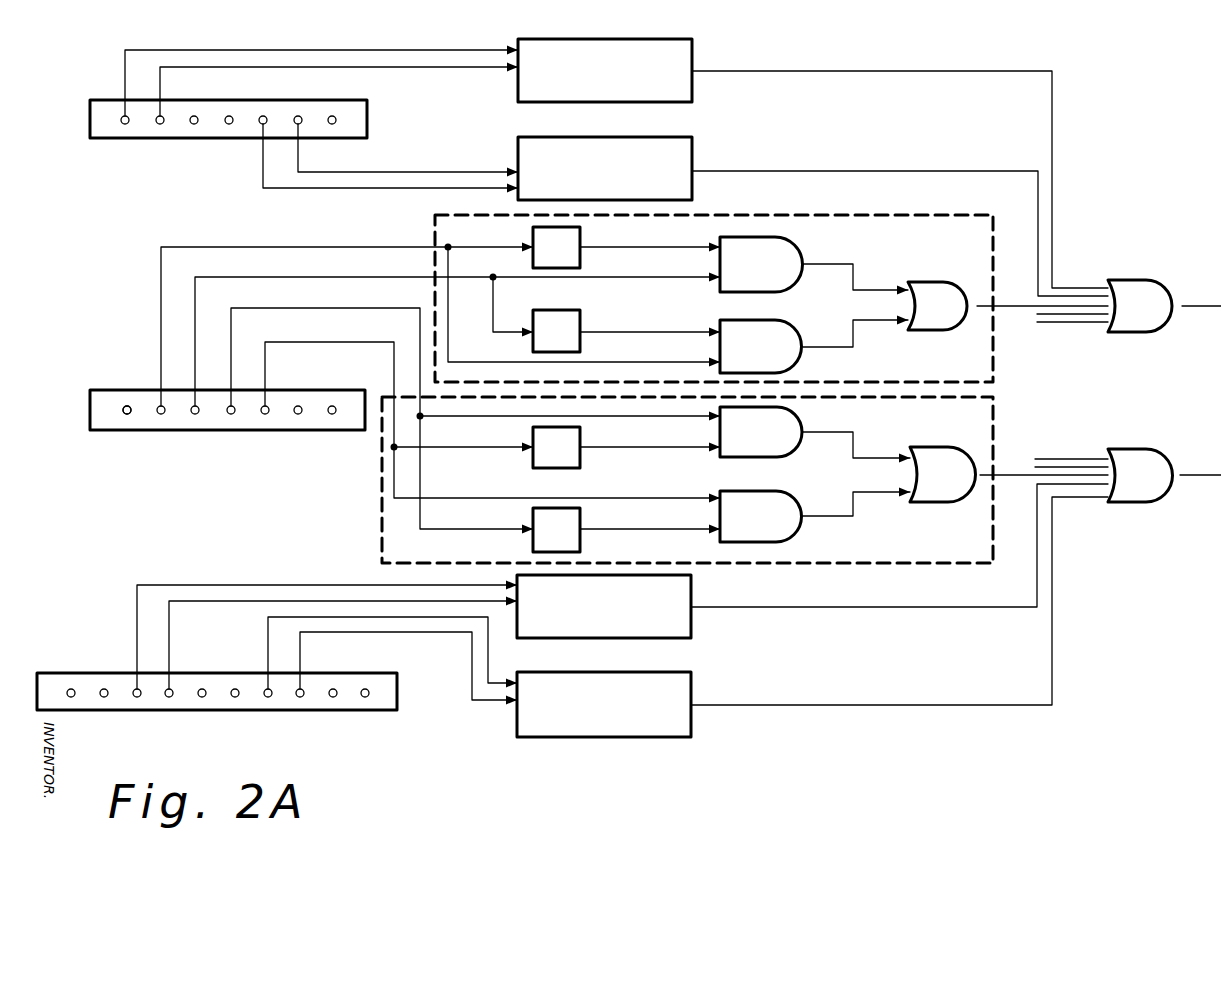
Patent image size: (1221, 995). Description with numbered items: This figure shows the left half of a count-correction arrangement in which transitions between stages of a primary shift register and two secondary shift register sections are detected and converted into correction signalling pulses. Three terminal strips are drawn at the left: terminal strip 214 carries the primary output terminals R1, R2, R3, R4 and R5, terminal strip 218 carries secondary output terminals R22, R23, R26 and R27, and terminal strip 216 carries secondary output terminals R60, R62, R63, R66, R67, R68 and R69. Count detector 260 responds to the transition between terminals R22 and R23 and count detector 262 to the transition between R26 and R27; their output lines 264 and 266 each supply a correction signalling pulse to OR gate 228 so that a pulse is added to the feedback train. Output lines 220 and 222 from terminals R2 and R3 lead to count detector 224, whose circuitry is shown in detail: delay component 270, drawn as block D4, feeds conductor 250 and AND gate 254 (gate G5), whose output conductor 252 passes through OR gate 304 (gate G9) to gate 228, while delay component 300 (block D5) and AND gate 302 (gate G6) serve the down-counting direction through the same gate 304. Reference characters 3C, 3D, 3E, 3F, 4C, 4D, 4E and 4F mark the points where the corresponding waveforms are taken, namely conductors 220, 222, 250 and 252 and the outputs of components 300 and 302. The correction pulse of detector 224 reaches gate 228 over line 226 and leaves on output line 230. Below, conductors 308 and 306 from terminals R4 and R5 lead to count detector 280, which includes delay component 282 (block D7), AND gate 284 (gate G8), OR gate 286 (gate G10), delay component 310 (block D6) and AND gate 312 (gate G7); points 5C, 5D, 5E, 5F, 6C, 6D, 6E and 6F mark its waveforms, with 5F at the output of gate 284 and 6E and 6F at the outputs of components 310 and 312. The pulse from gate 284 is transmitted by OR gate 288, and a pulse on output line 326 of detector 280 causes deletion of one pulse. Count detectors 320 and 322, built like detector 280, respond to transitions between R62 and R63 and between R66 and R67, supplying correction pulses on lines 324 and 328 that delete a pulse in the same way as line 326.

The terminal strip 218 is at (367, 134).
The secondary output terminal R22 is at (122, 124).
The secondary output terminal R23 is at (157, 124).
The secondary output terminal R26 is at (259, 119).
The secondary output terminal R27 is at (300, 118).
The count detector 260 is at (657, 22).
The count detector 262 is at (667, 122).
The output line 264 is at (866, 58).
The output line 266 is at (886, 148).
The count detector circuit 224 is at (927, 215).
The terminal strip 214 is at (354, 432).
The primary output terminal R1 is at (124, 414).
The primary output terminal R2 is at (158, 414).
The primary output terminal R3 is at (192, 414).
The primary output terminal R4 is at (228, 414).
The primary output terminal R5 is at (262, 414).
The waveform reference point 3C is at (250, 228).
The waveform reference point 4D is at (326, 228).
The waveform reference point 3D is at (268, 262).
The waveform reference point 4C is at (333, 262).
The waveform reference point 5C is at (316, 292).
The waveform reference point 6C is at (381, 292).
The waveform reference point 5D is at (346, 324).
The waveform reference point 6D is at (400, 324).
The conductor 308 is at (233, 343).
The conductor 306 is at (270, 384).
The output line 220 is at (161, 300).
The output line 222 is at (195, 330).
The delay D4 is at (626, 247).
The delay D5 is at (626, 331).
The delay D6 is at (626, 447).
The delay D7 is at (626, 530).
The delay component 270 is at (580, 242).
The waveform reference point 3E is at (690, 238).
The conductor 250 is at (612, 248).
The delay component 300 is at (567, 312).
The waveform reference point 4E is at (676, 318).
The AND gate G5 is at (814, 266).
The AND gate G6 is at (814, 345).
The AND gate G7 is at (815, 435).
The AND gate G8 is at (815, 515).
The OR gate G9 is at (1008, 306).
The OR gate G10 is at (1009, 474).
The AND gate 254 is at (780, 244).
The AND gate 302 is at (770, 324).
The waveform reference point 3F is at (884, 248).
The waveform reference point 4F is at (840, 336).
The conductor 252 is at (854, 280).
The OR gate 304 is at (978, 264).
The OR gate 228 is at (1150, 248).
The line 226 is at (1018, 310).
The output line 230 is at (1206, 310).
The count detector 280 is at (1004, 446).
The delay component 310 is at (580, 442).
The waveform reference point 6E is at (690, 438).
The delay component 282 is at (577, 525).
The waveform reference point 5E is at (696, 520).
The AND gate 312 is at (800, 424).
The waveform reference point 6F is at (824, 436).
The AND gate 284 is at (790, 476).
The waveform reference point 5F is at (846, 494).
The OR gate 286 is at (974, 426).
The OR gate 288 is at (1107, 550).
The output line 326 is at (1022, 478).
The count detector 320 is at (692, 604).
The count detector 322 is at (696, 700).
The line 324 is at (954, 594).
The line 328 is at (954, 682).
The terminal strip 216 is at (397, 687).
The secondary output terminal R60 is at (74, 697).
The secondary output terminal R62 is at (134, 697).
The secondary output terminal R63 is at (172, 697).
The secondary output terminal R66 is at (265, 697).
The secondary output terminal R67 is at (297, 697).
The secondary output terminal R68 is at (333, 697).
The secondary output terminal R69 is at (368, 697).